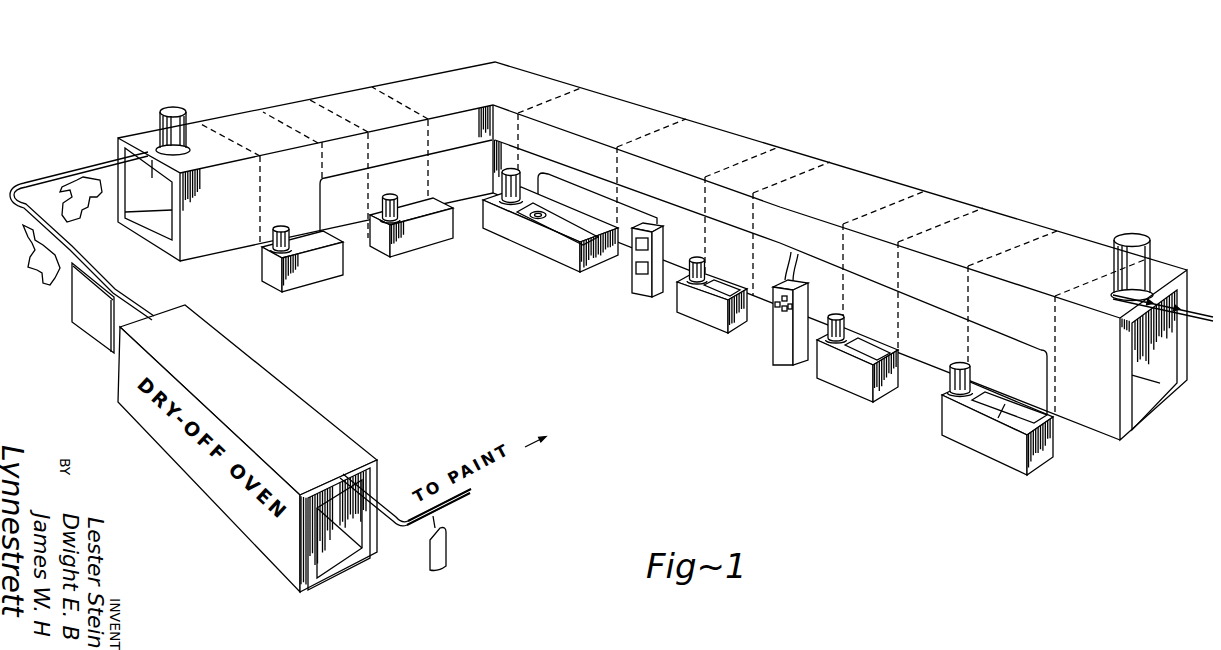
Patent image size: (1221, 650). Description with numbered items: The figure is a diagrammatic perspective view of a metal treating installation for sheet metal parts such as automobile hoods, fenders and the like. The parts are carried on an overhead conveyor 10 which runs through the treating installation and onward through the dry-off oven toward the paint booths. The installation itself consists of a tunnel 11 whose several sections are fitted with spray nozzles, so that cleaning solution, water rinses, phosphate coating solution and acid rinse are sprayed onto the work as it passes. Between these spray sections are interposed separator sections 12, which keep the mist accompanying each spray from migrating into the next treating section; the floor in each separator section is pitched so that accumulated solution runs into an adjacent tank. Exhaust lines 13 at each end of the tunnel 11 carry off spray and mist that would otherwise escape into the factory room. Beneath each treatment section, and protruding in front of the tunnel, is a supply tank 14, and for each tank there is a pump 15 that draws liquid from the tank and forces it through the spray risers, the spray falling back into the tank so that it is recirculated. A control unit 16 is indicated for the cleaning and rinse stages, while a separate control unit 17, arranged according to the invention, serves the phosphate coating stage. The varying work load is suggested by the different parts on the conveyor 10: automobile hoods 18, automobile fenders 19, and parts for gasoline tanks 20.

The overhead conveyor 10 is at (49, 177).
The tunnel 11 is at (650, 258).
The separator sections 12 is at (134, 134).
The exhaust lines 13 is at (175, 109).
The supply tank 14 is at (322, 269).
The pump 15 is at (275, 251).
The control unit 16 is at (775, 349).
The control unit 17 is at (631, 284).
The automobile hoods 18 is at (98, 344).
The automobile fenders 19 is at (86, 209).
The parts for gasoline tanks 20 is at (447, 570).